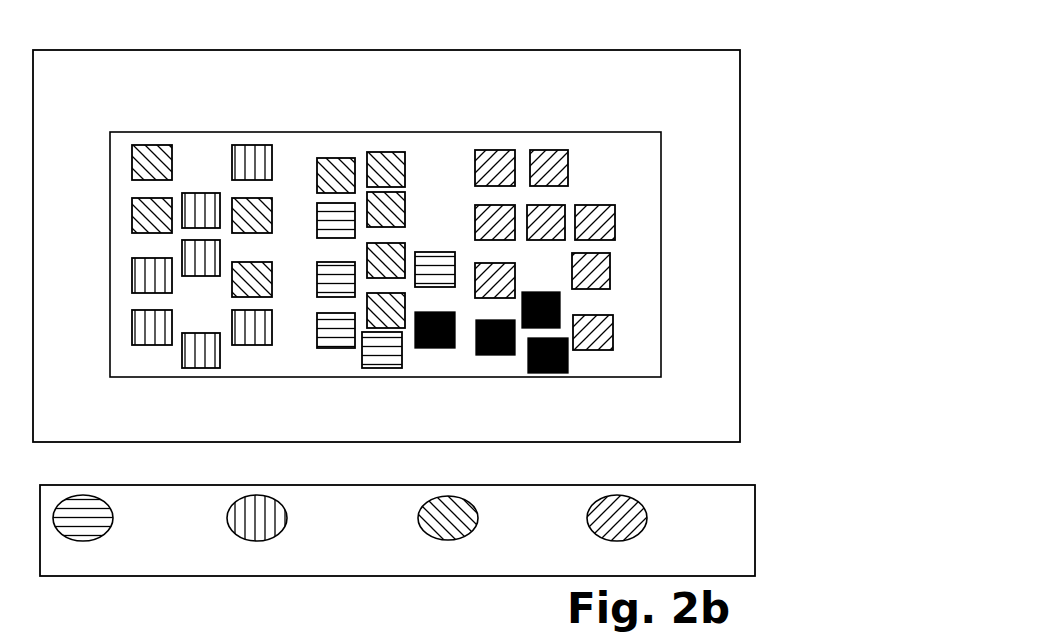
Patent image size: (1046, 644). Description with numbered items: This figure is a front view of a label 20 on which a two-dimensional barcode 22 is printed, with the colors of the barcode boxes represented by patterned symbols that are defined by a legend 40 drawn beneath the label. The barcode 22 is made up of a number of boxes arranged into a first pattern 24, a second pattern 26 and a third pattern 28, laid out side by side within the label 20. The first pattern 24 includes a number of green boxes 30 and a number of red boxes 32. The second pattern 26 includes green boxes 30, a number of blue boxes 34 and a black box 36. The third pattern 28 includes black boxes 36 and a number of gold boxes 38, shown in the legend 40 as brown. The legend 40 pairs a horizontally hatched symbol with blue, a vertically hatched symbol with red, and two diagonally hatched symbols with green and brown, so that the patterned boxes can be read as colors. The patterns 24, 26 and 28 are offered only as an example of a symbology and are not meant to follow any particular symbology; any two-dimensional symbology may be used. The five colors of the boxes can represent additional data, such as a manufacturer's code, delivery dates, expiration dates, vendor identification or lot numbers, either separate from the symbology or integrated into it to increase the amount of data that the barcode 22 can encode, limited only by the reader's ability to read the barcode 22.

The label 20 is at (672, 27).
The two-dimensional barcode 22 is at (121, 110).
The first pattern 24 is at (191, 113).
The second pattern 26 is at (351, 116).
The third pattern 28 is at (541, 116).
The green boxes 30 is at (133, 218).
The red boxes 32 is at (255, 145).
The blue boxes 34 is at (385, 366).
The black boxes 36 is at (430, 348).
The gold boxes 38 is at (613, 218).
The legend 40 is at (686, 473).